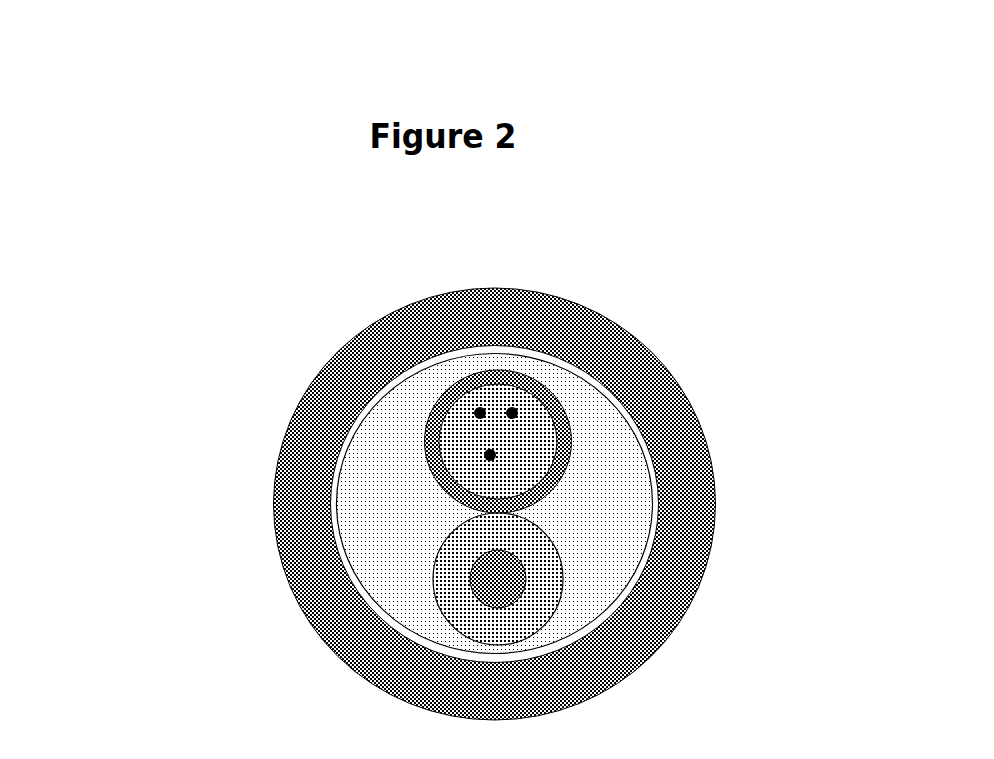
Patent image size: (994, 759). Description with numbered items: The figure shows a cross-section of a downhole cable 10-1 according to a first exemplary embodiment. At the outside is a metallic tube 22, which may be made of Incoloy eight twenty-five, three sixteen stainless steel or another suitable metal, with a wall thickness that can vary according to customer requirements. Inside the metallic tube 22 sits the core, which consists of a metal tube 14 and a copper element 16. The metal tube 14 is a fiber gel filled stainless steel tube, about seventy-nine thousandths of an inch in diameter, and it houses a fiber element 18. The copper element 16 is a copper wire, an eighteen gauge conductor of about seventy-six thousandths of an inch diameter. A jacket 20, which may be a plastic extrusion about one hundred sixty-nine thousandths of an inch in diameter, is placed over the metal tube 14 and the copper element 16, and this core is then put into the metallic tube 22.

The downhole cable 10-1 is at (477, 504).
The metallic tube 22 is at (696, 427).
The jacket 20 is at (413, 619).
The metal tube 14 is at (425, 462).
The fiber element 18 is at (476, 413).
The copper element 16 is at (468, 547).